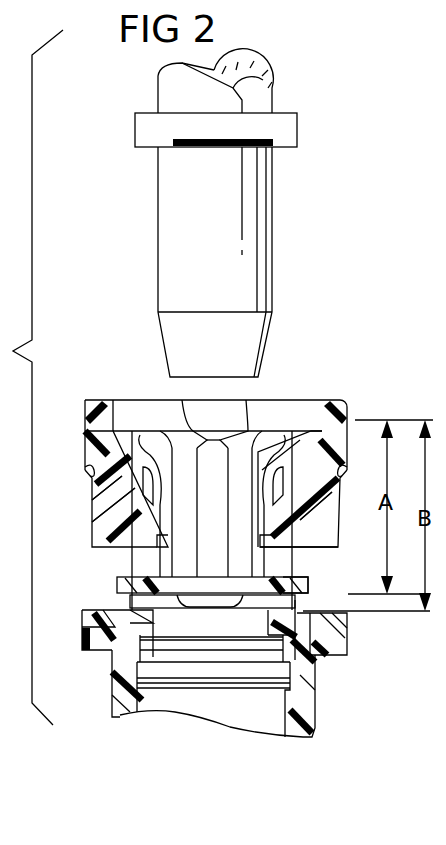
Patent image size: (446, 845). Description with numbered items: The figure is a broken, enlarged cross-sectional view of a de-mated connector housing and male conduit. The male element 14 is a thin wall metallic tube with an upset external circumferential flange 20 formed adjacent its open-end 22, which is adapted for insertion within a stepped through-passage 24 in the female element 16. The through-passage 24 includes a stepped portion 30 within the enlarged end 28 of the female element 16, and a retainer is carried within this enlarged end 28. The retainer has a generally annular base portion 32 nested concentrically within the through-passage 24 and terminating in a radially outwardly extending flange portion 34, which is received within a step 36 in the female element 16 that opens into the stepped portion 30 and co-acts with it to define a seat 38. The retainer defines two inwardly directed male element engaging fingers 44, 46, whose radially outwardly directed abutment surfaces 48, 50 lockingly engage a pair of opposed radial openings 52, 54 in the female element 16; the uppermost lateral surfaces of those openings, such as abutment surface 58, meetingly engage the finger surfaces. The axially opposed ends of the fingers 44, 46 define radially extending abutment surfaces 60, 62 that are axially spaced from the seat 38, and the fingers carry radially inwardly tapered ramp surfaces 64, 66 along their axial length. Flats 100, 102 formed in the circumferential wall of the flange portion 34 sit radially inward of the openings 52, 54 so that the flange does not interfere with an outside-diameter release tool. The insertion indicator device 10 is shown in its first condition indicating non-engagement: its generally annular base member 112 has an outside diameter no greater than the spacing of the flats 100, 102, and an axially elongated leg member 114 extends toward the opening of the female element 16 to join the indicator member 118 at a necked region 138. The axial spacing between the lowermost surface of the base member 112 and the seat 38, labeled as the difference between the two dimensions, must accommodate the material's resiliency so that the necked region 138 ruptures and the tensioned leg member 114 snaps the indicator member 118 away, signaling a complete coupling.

The insertion indicator device 10 is at (330, 380).
The male element 14 is at (140, 79).
The female element 16 is at (95, 708).
The external circumferential flange 20 is at (143, 129).
The open-end 22 is at (172, 250).
The stepped through-passage 24 is at (250, 713).
The enlarged end 28 is at (86, 427).
The stepped portion 30 is at (120, 556).
The base portion 32 is at (172, 612).
The flange portion 34 is at (335, 650).
The step 36 is at (105, 657).
The seat 38 is at (84, 607).
The male element engaging finger 44 is at (306, 560).
The male element engaging finger 46 is at (98, 516).
The abutment surface 48 is at (340, 480).
The abutment surface 50 is at (92, 472).
The radial opening 52 is at (335, 525).
The radial opening 54 is at (98, 533).
The abutment surface 58 is at (84, 455).
The abutment surface 60 is at (300, 583).
The abutment surface 62 is at (118, 582).
The ramp surface 64 is at (275, 440).
The ramp surface 66 is at (97, 492).
The flat 100 is at (350, 632).
The flat 102 is at (84, 628).
The base member 112 is at (130, 601).
The leg member 114 is at (241, 378).
The indicator member 118 is at (113, 400).
The necked region 138 is at (182, 400).